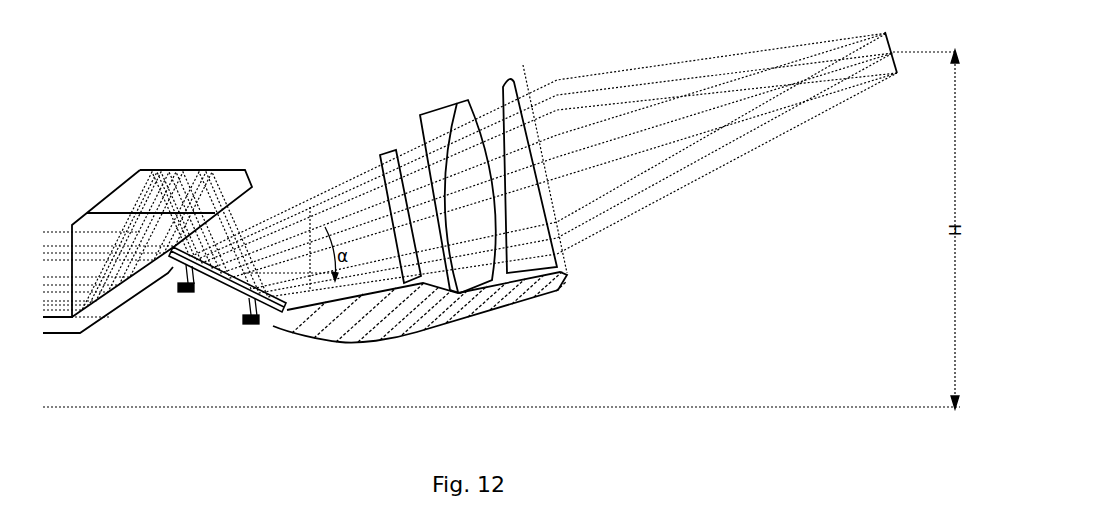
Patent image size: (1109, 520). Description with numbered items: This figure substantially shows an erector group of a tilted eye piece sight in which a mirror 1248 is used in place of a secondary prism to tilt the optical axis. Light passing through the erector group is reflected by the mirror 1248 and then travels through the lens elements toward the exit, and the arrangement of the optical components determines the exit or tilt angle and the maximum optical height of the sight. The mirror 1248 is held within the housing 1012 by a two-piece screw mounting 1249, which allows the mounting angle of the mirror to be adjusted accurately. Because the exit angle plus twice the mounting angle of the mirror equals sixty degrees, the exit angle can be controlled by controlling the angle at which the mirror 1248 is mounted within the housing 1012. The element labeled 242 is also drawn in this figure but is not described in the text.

The prism 242 is at (190, 172).
The mirror 1248 is at (277, 314).
The two-piece screw mounting 1249 is at (185, 293).
The housing 1012 is at (367, 340).